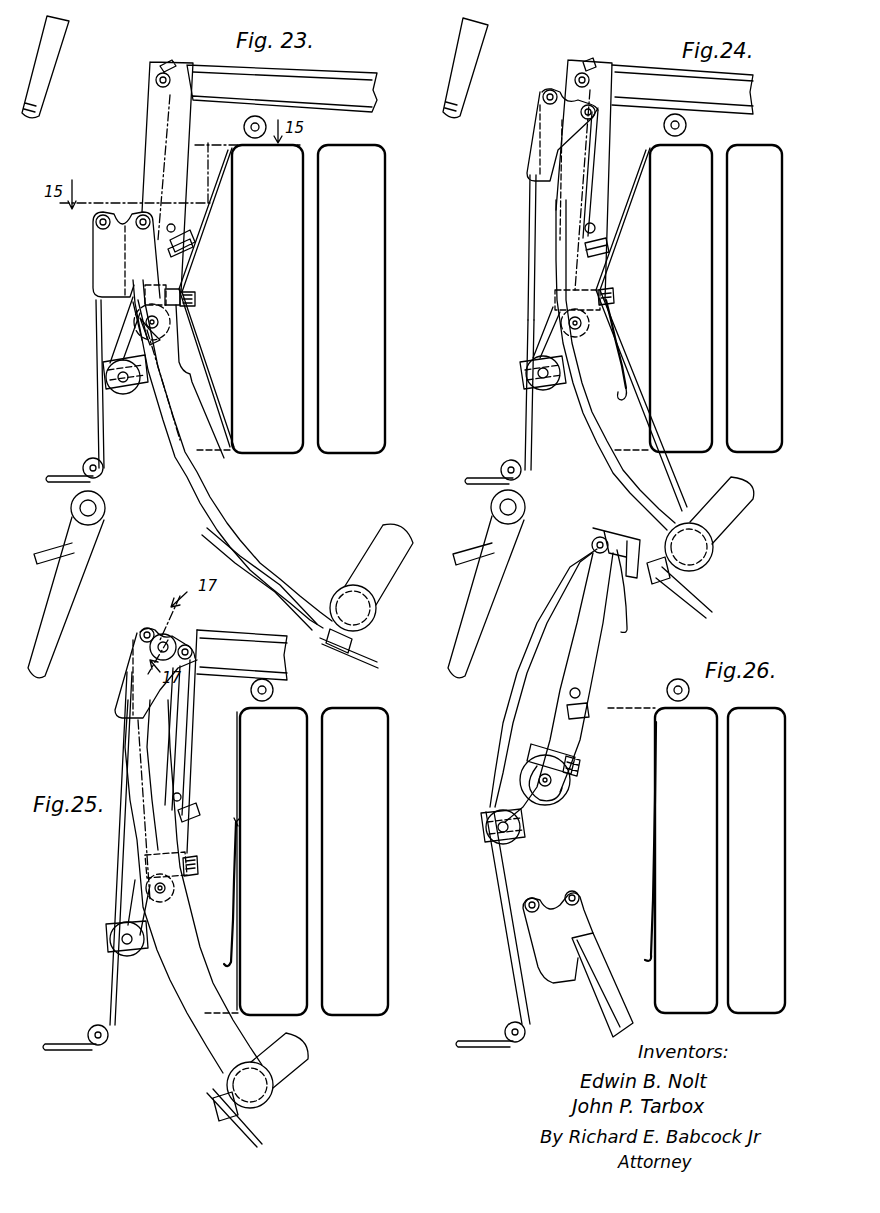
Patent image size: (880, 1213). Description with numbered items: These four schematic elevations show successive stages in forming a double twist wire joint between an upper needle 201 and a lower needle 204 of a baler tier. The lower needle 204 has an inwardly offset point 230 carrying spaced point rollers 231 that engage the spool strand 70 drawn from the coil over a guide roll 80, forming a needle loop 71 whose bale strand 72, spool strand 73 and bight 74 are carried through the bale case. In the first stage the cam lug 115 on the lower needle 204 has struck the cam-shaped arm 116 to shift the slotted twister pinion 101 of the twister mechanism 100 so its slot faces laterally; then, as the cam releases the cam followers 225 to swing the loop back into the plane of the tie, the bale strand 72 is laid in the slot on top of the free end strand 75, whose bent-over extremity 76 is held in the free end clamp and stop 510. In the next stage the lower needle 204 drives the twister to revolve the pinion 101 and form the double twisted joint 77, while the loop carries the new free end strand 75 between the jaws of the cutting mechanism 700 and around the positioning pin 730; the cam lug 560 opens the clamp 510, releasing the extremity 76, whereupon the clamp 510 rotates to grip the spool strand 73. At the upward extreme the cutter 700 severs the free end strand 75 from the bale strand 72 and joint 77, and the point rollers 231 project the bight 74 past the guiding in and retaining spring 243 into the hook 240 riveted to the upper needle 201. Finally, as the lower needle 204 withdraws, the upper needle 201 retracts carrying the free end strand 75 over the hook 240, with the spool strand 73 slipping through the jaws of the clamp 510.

In FIG. 23, the upper needle 201 is at (162, 143).
In FIG. 25, the upper needle 201 is at (190, 774).
In FIG. 23, the point of the lower needle 230 is at (105, 262).
In FIG. 25, the point of the lower needle 230 is at (130, 662).
In FIG. 25, the point rollers 231 is at (146, 630).
In FIG. 24, the point rollers 231 is at (548, 92).
In FIG. 24, the hook 240 is at (573, 72).
In FIG. 26, the hook 240 is at (598, 538).
In FIG. 24, the guiding in and retaining spring 243 is at (592, 62).
In FIG. 23, the twister mechanism 100 is at (187, 288).
In FIG. 26, the twister mechanism 100 is at (570, 774).
In FIG. 23, the slotted twister pinion 101 is at (190, 300).
In FIG. 24, the slotted twister pinion 101 is at (613, 300).
In FIG. 23, the lug 115 is at (135, 306).
In FIG. 23, the cam-shaped arm 116 is at (140, 319).
In FIG. 23, the bale strand 72 is at (205, 355).
In FIG. 25, the bale strand 72 is at (242, 927).
In FIG. 24, the bale strand 72 is at (637, 372).
In FIG. 23, the needle loop 71 is at (100, 401).
In FIG. 24, the needle loop 71 is at (530, 241).
In FIG. 24, the spool strand 73 is at (528, 336).
In FIG. 26, the spool strand 73 is at (492, 877).
In FIG. 25, the free end strand 75 is at (183, 750).
In FIG. 24, the free end strand 75 is at (596, 142).
In FIG. 26, the free end strand 75 is at (568, 568).
In FIG. 25, the bight 74 is at (175, 648).
In FIG. 24, the extremity of the free end strand 76 is at (640, 400).
In FIG. 25, the double twisted joint 77 is at (240, 835).
In FIG. 24, the double twisted joint 77 is at (612, 322).
In FIG. 23, the lower needle 204 is at (247, 503).
In FIG. 25, the lower needle 204 is at (178, 977).
In FIG. 24, the lower needle 204 is at (600, 425).
In FIG. 26, the lower needle 204 is at (603, 987).
In FIG. 25, the cam followers 225 is at (245, 1131).
In FIG. 24, the free end clamp and stop 510 is at (526, 386).
In FIG. 26, the free end clamp and stop 510 is at (487, 826).
In FIG. 24, the cam lug 560 is at (568, 394).
In FIG. 24, the guide roll 80 is at (510, 459).
In FIG. 24, the spool strand 70 is at (482, 470).
In FIG. 24, the cutting mechanism 700 is at (607, 250).
In FIG. 24, the pin 730 is at (593, 224).